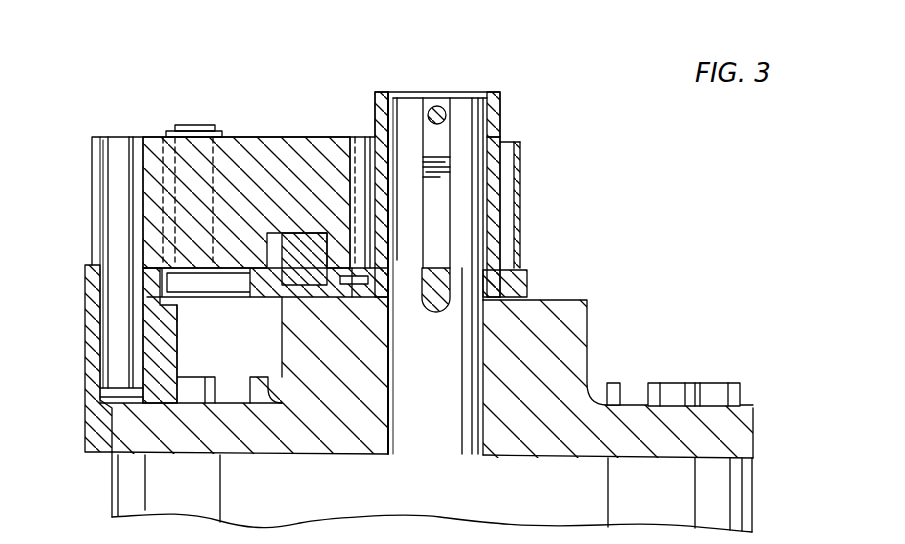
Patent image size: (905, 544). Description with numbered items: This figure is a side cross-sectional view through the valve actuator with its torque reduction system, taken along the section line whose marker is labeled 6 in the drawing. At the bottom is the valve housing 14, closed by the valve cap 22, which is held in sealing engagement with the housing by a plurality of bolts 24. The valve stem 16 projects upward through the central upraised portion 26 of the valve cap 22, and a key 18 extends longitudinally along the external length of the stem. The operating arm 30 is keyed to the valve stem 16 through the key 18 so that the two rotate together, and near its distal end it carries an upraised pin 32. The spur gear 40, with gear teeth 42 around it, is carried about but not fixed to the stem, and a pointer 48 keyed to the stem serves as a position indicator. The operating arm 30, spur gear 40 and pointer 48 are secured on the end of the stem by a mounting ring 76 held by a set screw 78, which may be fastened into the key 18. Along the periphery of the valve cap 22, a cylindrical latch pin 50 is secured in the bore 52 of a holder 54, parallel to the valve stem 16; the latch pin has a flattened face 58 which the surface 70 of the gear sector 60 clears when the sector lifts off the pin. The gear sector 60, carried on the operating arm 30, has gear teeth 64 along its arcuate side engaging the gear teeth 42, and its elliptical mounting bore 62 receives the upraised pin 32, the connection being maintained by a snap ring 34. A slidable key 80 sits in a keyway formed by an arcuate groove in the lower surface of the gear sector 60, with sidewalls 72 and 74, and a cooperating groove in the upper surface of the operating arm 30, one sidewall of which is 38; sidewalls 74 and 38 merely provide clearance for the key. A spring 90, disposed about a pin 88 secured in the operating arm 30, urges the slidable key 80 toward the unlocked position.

The section line 6- 6 is at (230, 245).
The valve housing 14 is at (747, 493).
The valve stem 16 is at (470, 356).
The key 18 is at (455, 243).
The valve cap 22 is at (745, 434).
The bolts 24 is at (718, 390).
The central upraised portion 26 is at (578, 300).
The operating arm 30 is at (520, 288).
The upraised pin 32 is at (197, 124).
The snap ring 34 is at (175, 128).
The sidewall 38 is at (312, 298).
The spur gear 40 is at (500, 217).
The gear teeth 42 is at (520, 172).
The pointer 48 is at (500, 133).
The latch pin 50 is at (108, 175).
The bore 52 is at (107, 350).
The holder 54 is at (95, 300).
The flattened face 58 is at (137, 142).
The gear sector 60 is at (257, 155).
The elliptical mounting bore 62 is at (163, 198).
The gear teeth 64 is at (357, 137).
The surface 70 is at (92, 147).
The sidewall 72 is at (313, 245).
The sidewall 74 is at (268, 296).
The mounting ring 76 is at (500, 105).
The set screw 78 is at (439, 107).
The slidable key 80 is at (303, 300).
The pin 88 is at (360, 298).
The spring 90 is at (393, 300).